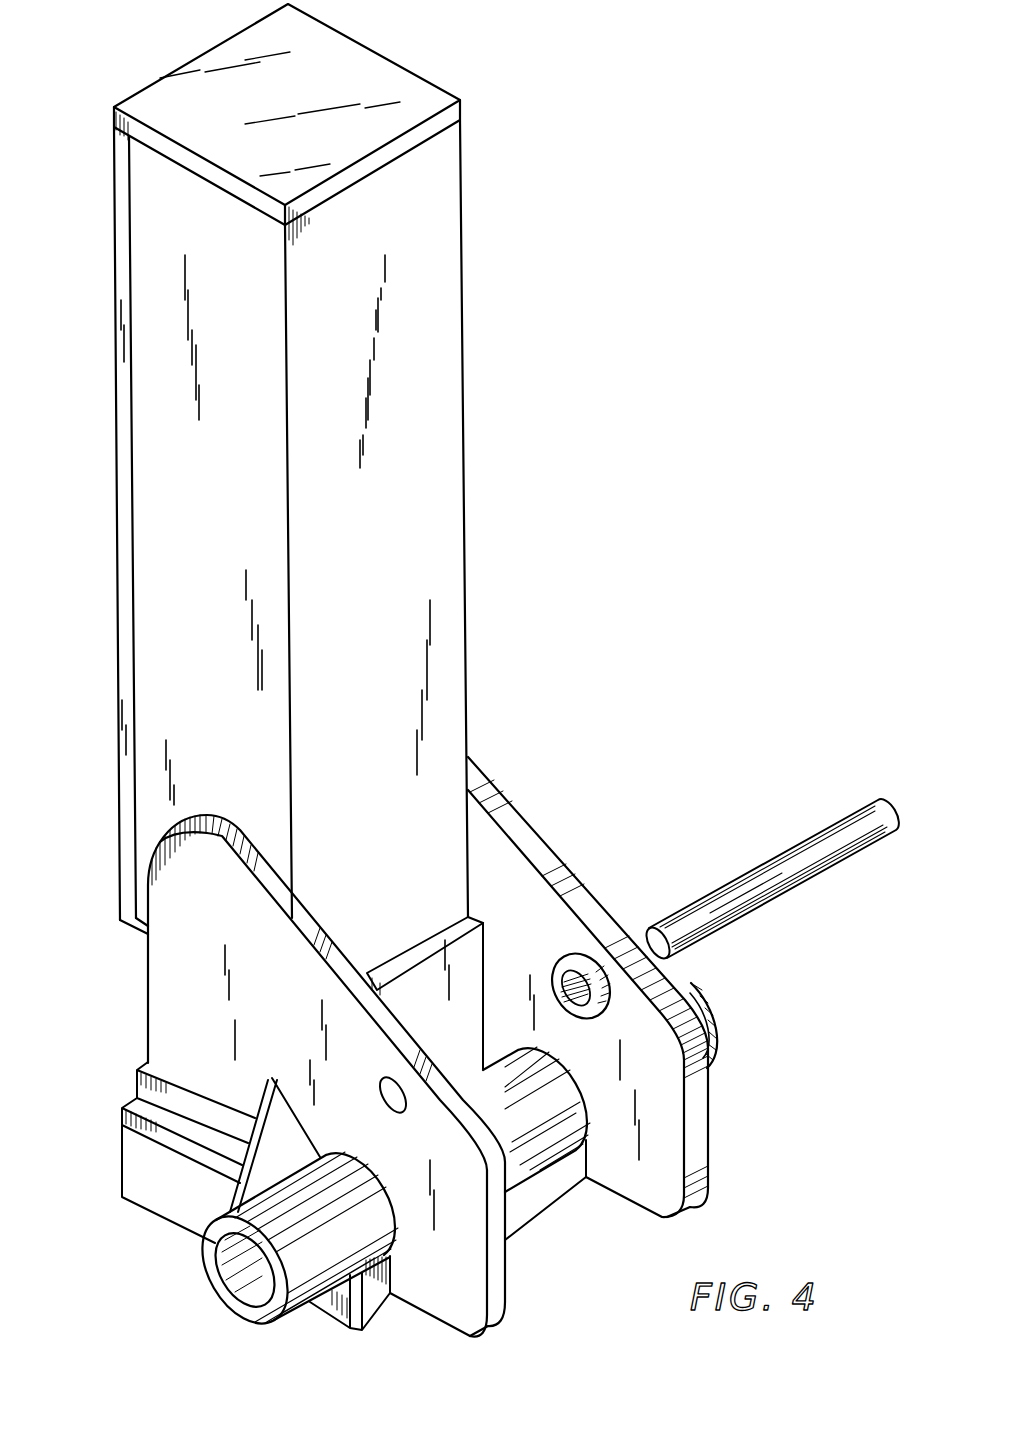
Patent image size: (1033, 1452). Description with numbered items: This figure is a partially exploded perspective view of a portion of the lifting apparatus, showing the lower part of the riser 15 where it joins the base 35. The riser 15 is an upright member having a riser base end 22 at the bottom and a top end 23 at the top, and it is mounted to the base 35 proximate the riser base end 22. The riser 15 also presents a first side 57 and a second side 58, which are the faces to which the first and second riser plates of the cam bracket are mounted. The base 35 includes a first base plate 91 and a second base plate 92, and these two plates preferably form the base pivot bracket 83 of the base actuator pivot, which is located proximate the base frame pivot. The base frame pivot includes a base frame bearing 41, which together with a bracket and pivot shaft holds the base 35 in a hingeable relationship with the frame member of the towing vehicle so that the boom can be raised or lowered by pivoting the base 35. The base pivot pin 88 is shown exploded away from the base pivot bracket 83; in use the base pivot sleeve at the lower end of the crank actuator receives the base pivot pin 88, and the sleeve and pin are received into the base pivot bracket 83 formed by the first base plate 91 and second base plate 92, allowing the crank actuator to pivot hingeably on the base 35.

The riser 15 is at (147, 553).
The riser base end 22 is at (133, 921).
The top end 23 is at (145, 203).
The base 35 is at (165, 1005).
The base frame bearing 41 is at (700, 1005).
The first side 57 is at (222, 677).
The second side 58 is at (468, 428).
The base pivot bracket 83 is at (602, 890).
The base pivot pin 88 is at (773, 870).
The first base plate 91 is at (262, 1013).
The second base plate 92 is at (532, 951).